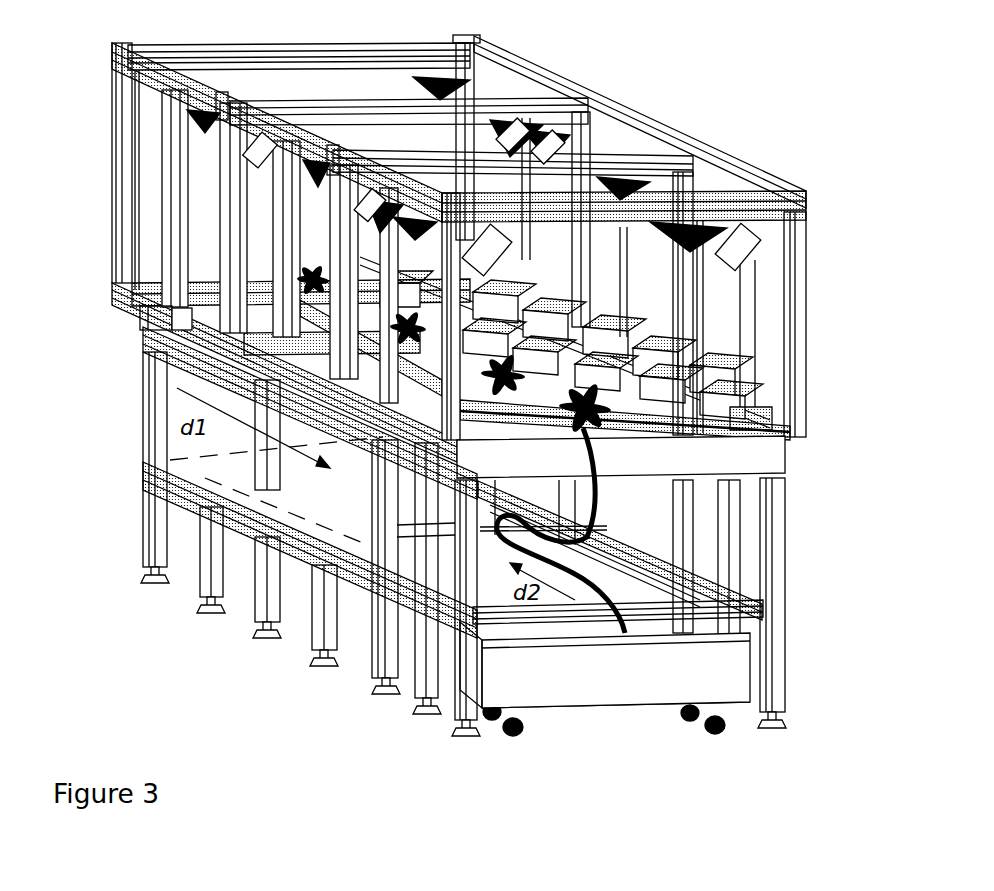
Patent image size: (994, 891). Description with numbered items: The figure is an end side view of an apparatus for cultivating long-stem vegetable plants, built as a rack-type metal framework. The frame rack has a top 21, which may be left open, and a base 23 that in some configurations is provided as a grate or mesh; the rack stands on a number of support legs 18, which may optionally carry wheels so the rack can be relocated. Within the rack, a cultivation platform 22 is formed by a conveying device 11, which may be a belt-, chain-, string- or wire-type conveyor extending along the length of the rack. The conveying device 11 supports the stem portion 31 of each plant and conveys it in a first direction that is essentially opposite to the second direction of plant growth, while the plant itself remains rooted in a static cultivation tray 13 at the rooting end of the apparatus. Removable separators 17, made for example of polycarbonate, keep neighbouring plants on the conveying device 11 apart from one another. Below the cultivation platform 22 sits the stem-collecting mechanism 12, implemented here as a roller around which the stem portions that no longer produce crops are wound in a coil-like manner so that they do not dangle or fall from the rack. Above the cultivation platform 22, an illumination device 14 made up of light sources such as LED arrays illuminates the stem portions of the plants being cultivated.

The conveying device 11 is at (213, 305).
The stem-collecting mechanism 12 is at (737, 477).
The cultivation tray 13 is at (737, 672).
The illumination device 14 is at (470, 113).
The separator 17 is at (480, 398).
The support legs 18 is at (152, 516).
The top of the frame rack 21 is at (100, 45).
The cultivation platform 22 is at (120, 308).
The base of the frame rack 23 is at (325, 508).
The stem portion of the long-stem vegetable plant 31 is at (603, 453).